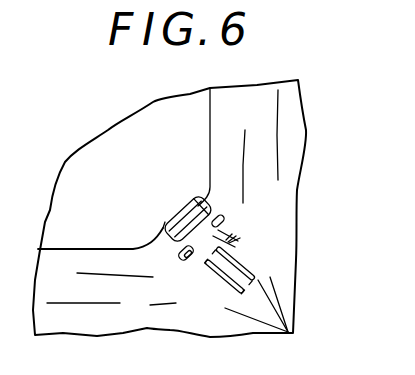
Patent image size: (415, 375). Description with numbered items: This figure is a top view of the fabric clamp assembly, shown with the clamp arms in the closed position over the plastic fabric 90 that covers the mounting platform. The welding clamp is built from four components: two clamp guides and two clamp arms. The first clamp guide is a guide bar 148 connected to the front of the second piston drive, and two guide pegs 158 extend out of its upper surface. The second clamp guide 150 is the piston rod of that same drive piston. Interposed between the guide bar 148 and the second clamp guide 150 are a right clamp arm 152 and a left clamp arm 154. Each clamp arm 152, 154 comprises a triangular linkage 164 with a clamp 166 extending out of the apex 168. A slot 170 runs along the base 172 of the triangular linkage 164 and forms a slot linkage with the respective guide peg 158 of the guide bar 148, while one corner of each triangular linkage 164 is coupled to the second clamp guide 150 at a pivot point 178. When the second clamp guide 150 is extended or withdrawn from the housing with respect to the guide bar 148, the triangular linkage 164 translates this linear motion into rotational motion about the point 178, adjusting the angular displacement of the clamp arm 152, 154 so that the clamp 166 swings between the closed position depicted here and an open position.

The plastic fabric 90 is at (305, 127).
The guide bar 148 is at (200, 200).
The second clamp guide 150 is at (225, 239).
The right clamp arm 152 is at (230, 242).
The left clamp arm 154 is at (197, 263).
The guide pegs 158 is at (197, 212).
The triangular linkage 164 is at (220, 216).
The clamp 166 is at (267, 270).
The apex 168 is at (232, 243).
The slot 170 is at (173, 248).
The base 172 is at (160, 228).
The coupling point 178 is at (182, 212).